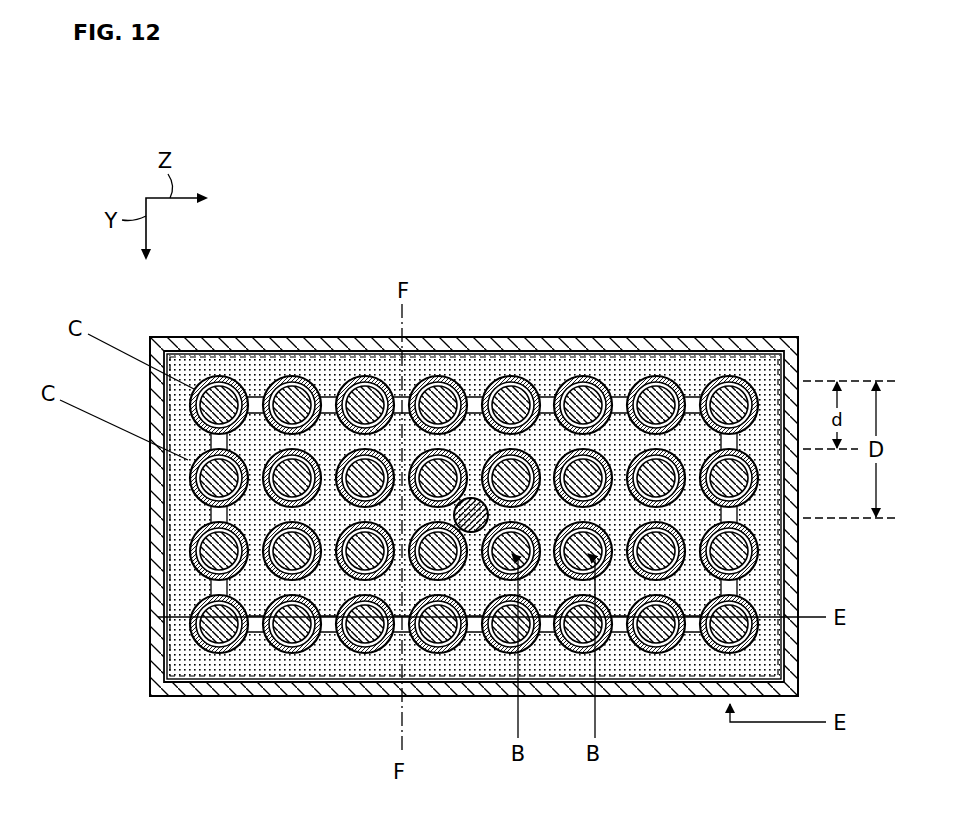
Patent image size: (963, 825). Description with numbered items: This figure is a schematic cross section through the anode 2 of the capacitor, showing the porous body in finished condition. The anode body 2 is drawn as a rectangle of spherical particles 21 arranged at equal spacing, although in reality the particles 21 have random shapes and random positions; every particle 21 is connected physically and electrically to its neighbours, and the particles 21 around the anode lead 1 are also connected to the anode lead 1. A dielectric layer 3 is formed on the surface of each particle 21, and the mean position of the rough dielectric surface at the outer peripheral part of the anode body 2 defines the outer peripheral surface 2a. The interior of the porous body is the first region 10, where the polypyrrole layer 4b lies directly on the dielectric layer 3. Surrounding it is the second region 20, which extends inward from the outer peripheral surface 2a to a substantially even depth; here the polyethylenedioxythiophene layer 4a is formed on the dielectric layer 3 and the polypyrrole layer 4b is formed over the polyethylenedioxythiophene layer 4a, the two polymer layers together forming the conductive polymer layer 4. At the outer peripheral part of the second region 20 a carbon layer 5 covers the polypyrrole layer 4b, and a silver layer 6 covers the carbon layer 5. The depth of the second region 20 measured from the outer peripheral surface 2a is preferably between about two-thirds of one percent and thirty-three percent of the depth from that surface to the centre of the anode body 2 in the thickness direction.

The anode lead 1 is at (463, 524).
The anode body 2 is at (408, 422).
The outer peripheral surface 2a is at (262, 335).
The dielectric layer 3 is at (517, 378).
The conductive polymer layer 4 is at (520, 300).
The polyethylenedioxythiophene layer 4a is at (490, 369).
The polypyrrole layer 4b is at (468, 366).
The carbon layer 5 is at (346, 352).
The silver layer 6 is at (308, 344).
The first region 10 is at (430, 466).
The second region 20 is at (713, 346).
The particles 21 is at (510, 385).